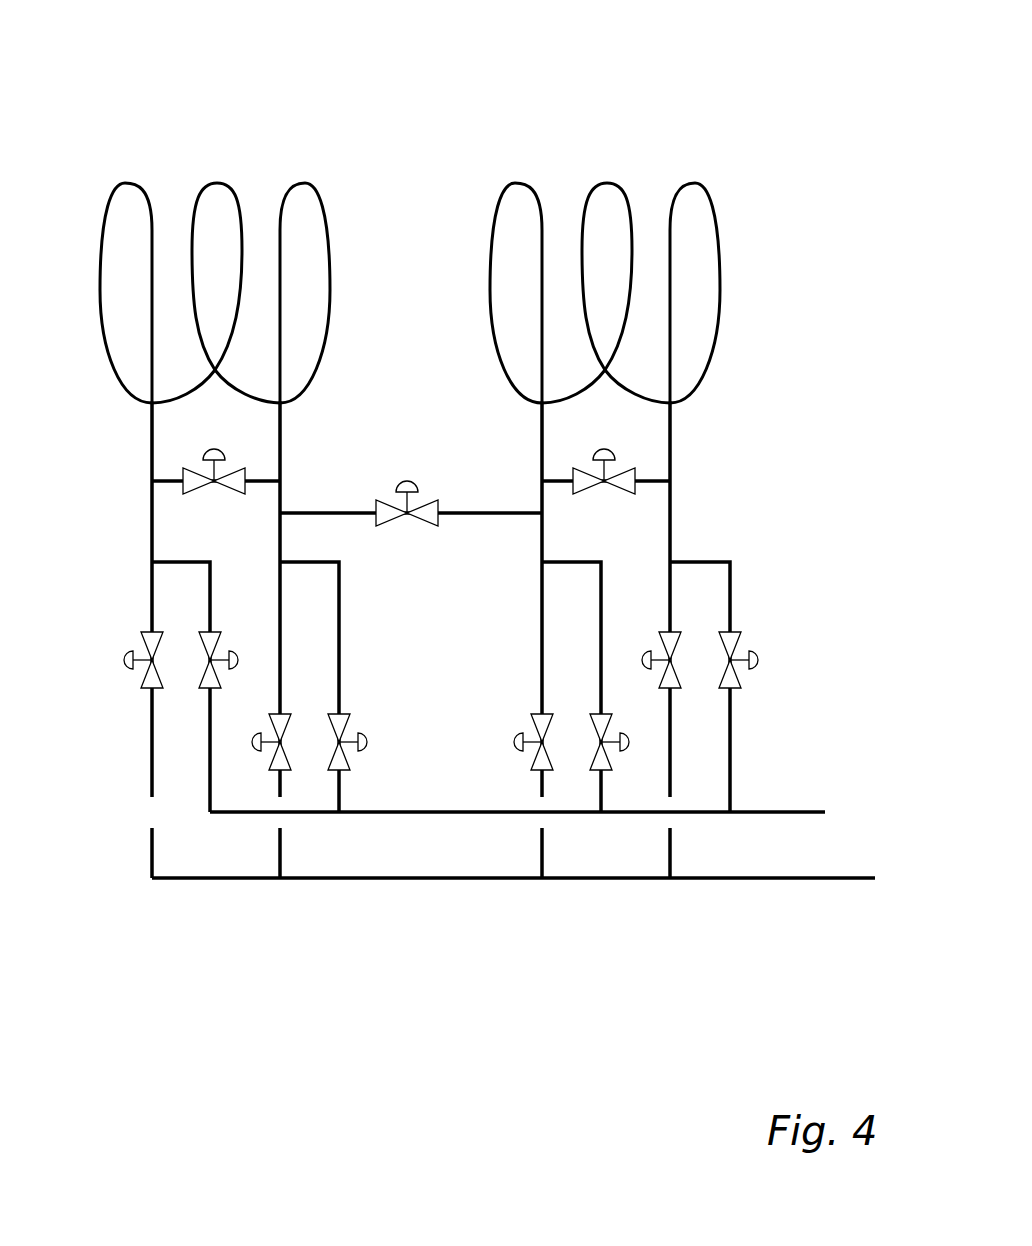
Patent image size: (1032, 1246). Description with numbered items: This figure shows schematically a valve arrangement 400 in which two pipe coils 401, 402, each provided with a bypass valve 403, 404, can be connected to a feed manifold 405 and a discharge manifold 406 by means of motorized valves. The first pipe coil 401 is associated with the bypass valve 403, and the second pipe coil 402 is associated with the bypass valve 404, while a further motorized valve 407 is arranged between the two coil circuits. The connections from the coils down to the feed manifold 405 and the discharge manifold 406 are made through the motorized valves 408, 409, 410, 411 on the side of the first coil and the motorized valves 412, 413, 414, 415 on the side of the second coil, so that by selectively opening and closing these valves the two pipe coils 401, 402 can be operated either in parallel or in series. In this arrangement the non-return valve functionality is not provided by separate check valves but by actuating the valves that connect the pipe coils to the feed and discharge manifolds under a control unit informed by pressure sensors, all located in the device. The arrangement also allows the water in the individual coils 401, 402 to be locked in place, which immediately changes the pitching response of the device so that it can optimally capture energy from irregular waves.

The valve arrangement 400 is at (500, 87).
The pipe coil 401 is at (345, 292).
The pipe coil 402 is at (742, 365).
The bypass valve 403 is at (198, 442).
The bypass valve 404 is at (577, 443).
The feed manifold 405 is at (838, 892).
The discharge manifold 406 is at (775, 802).
The motorized valve 407 is at (413, 535).
The motorized valve 408 is at (132, 625).
The motorized valve 409 is at (198, 698).
The motorized valve 410 is at (267, 763).
The motorized valve 411 is at (365, 768).
The motorized valve 412 is at (527, 762).
The motorized valve 413 is at (625, 775).
The motorized valve 414 is at (677, 620).
The motorized valve 415 is at (770, 638).